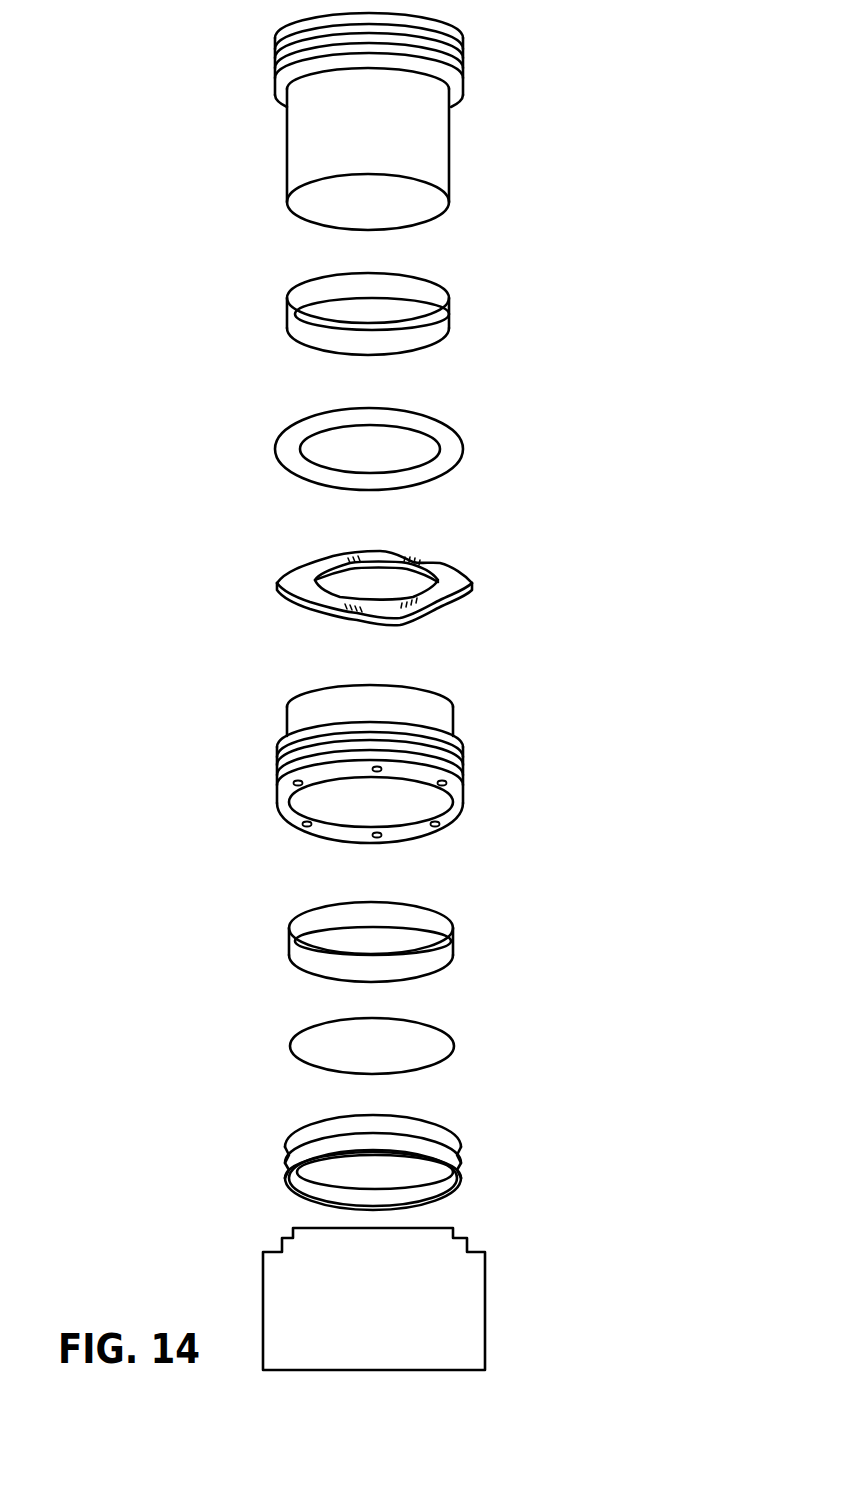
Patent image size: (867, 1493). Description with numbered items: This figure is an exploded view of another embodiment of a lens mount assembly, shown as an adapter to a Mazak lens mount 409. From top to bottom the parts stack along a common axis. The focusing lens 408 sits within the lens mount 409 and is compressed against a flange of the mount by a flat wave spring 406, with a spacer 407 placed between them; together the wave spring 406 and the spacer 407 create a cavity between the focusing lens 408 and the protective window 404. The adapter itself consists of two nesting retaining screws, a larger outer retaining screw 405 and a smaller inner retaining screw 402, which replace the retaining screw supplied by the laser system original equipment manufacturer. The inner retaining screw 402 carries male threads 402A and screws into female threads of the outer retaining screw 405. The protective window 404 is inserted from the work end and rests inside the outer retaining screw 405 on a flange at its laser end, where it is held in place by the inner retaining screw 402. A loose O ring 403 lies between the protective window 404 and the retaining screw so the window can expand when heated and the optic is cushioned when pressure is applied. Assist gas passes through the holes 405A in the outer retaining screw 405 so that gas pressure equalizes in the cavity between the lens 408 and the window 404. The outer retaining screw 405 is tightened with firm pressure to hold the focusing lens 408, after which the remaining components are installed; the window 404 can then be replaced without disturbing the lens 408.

The inner retaining screw 402 is at (371, 1162).
The male threads 402A is at (455, 1176).
The O ring 403 is at (302, 1060).
The protective window 404 is at (290, 938).
The outer retaining screw 405 is at (386, 764).
The holes 405A is at (443, 782).
The wave spring 406 is at (283, 592).
The spacer 407 is at (278, 440).
The focusing lens 408 is at (287, 308).
The lens mount 409 is at (290, 180).